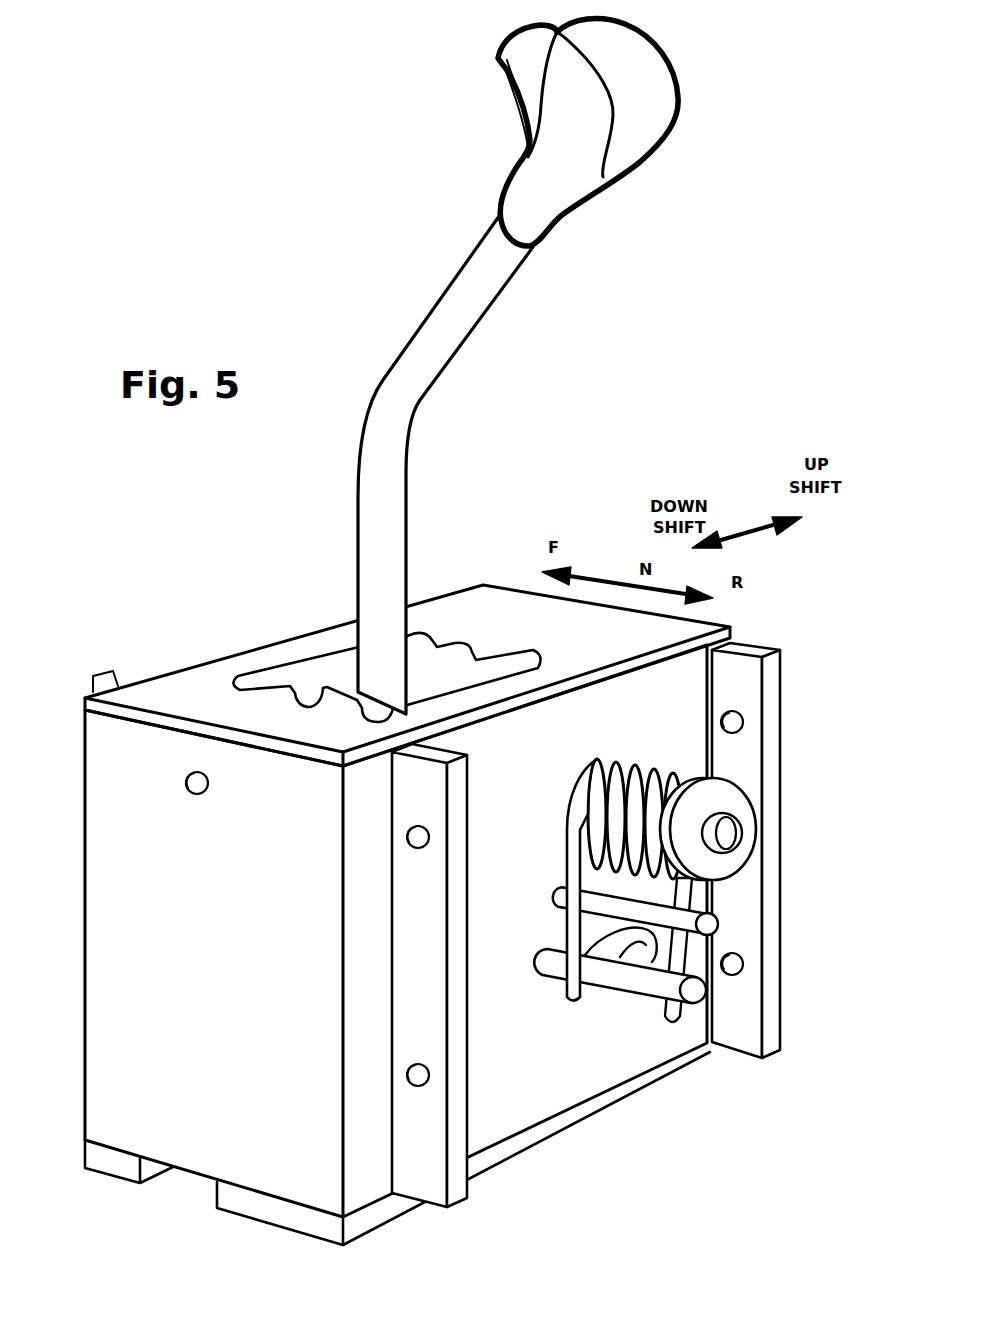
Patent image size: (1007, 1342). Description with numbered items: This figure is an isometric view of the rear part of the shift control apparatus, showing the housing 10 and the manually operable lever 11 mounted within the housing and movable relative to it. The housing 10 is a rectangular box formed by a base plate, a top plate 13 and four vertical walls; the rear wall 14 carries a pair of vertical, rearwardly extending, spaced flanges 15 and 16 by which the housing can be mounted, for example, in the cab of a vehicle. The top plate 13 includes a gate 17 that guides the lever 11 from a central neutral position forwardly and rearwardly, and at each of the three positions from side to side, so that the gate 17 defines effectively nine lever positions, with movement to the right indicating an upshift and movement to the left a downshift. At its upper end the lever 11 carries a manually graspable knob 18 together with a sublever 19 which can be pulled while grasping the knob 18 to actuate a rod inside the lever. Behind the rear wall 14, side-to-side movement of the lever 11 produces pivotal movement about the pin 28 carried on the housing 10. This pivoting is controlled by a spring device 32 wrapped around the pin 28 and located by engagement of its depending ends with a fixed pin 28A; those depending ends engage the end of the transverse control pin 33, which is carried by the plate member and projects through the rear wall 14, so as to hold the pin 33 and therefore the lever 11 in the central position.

The housing 10 is at (128, 897).
The manually operable lever 11 is at (407, 397).
The top plate 13 is at (487, 600).
The rear wall 14 is at (523, 1080).
The flange 15 is at (432, 906).
The flange 16 is at (743, 688).
The gate 17 is at (317, 660).
The knob 18 is at (577, 168).
The sublever 19 is at (526, 50).
The pin 28 is at (730, 832).
The fixed pin 28A is at (707, 924).
The spring device 32 is at (666, 756).
The transverse control pin 33 is at (690, 987).